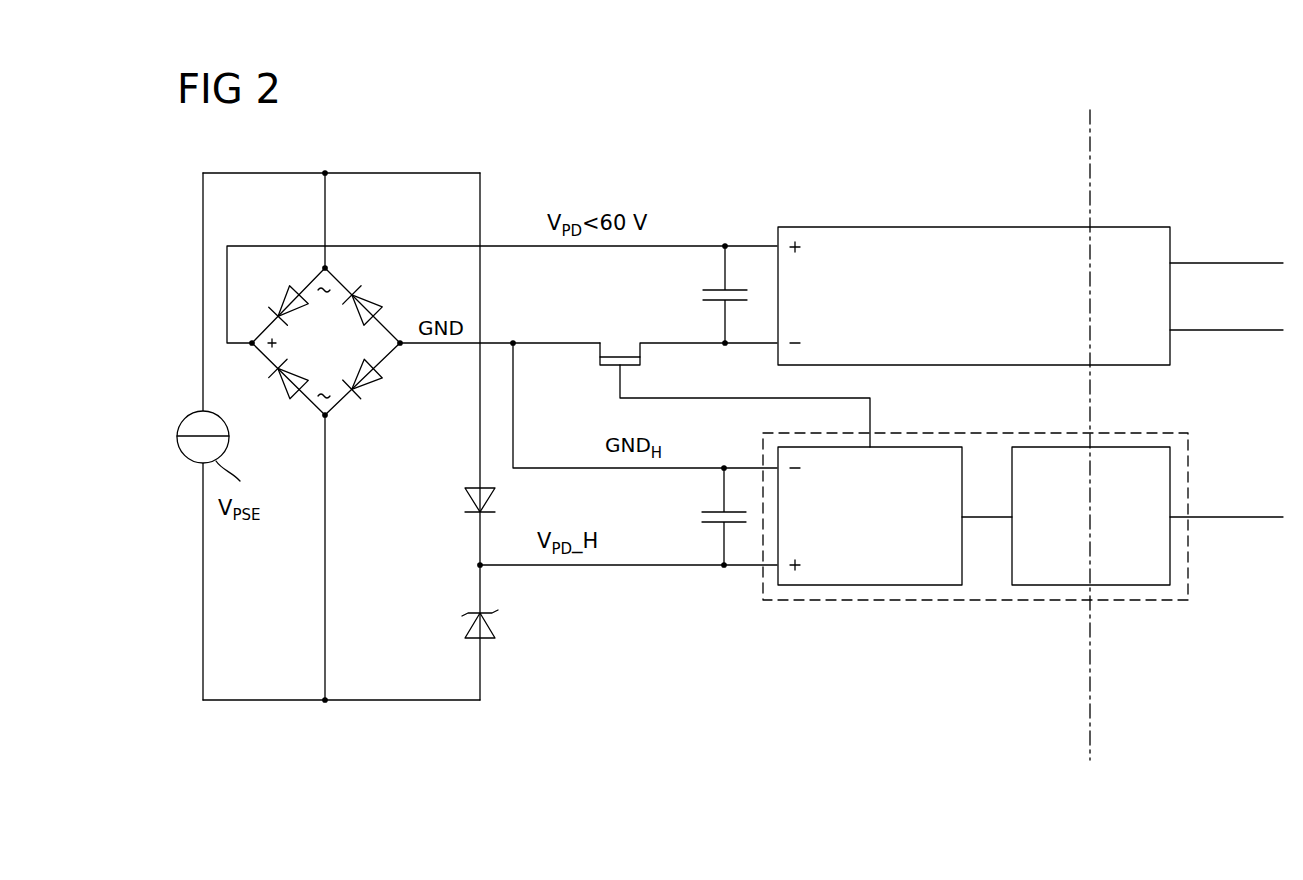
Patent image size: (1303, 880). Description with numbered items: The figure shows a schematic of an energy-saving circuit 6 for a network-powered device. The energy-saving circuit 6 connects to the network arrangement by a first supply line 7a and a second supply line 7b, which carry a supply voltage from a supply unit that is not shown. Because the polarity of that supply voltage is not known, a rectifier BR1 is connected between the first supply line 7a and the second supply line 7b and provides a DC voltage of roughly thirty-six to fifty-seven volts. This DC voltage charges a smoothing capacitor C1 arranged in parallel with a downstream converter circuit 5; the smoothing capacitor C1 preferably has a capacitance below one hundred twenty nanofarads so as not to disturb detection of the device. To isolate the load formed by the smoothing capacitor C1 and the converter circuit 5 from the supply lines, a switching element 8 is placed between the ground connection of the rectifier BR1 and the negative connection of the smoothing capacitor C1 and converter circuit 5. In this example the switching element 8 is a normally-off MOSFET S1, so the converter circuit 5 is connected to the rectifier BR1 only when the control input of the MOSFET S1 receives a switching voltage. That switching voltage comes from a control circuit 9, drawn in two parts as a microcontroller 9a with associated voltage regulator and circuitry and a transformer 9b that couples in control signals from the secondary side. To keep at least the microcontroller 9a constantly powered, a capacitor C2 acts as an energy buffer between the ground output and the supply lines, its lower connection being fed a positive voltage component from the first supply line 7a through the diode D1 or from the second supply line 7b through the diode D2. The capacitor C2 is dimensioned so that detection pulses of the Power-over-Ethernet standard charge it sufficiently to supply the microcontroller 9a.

The converter circuit 5 is at (952, 227).
The energy-saving circuit 6 is at (986, 684).
The first supply line 7a is at (384, 172).
The second supply line 7b is at (383, 700).
The switching element 8 is at (706, 375).
The control circuit 9 is at (1023, 549).
The microcontroller 9a is at (858, 586).
The transformer 9b is at (1058, 586).
The rectifier BR1 is at (392, 377).
The smoothing capacitor C1 is at (703, 296).
The capacitor C2 is at (702, 516).
The diode D1 is at (466, 496).
The diode D2 is at (466, 630).
The MOSFET S1 is at (611, 323).